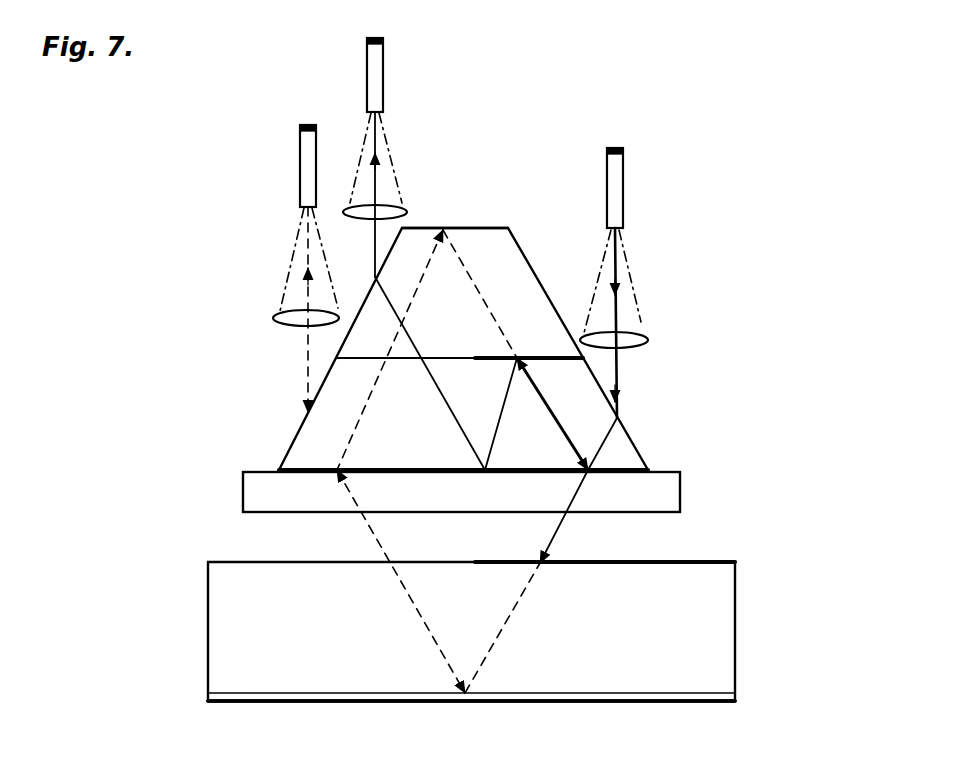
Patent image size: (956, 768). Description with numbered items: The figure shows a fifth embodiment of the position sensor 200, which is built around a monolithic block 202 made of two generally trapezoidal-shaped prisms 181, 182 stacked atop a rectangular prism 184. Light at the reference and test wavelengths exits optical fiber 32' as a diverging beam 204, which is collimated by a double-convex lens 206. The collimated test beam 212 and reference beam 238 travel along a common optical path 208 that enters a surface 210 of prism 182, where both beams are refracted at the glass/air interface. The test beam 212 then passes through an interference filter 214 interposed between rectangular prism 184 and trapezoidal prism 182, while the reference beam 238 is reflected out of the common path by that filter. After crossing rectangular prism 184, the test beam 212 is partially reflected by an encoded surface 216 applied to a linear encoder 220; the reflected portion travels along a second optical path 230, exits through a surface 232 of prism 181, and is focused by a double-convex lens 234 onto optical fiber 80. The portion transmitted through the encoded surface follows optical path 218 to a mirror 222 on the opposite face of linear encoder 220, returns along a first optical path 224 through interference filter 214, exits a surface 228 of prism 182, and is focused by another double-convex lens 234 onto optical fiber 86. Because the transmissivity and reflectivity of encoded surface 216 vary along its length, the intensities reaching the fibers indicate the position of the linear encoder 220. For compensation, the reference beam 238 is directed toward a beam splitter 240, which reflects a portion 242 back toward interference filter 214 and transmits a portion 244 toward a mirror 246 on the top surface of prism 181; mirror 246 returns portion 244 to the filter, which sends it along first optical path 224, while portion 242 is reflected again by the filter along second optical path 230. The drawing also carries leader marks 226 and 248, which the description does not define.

The optical fiber 80 is at (384, 64).
The optical fiber 86 is at (300, 152).
The optical fiber 32' is at (653, 187).
The trapezoidal-shaped prism 181 is at (490, 246).
The trapezoidal-shaped prism 182 is at (492, 333).
The rectangular prism 184 is at (243, 496).
The position sensor 200 is at (790, 347).
The monolithic block 202 is at (280, 392).
The diverging beam 204 is at (640, 287).
The double-convex lens 206 is at (649, 338).
The common optical path 208 is at (622, 382).
The surface 210 is at (613, 428).
The test beam 212 is at (580, 495).
The interference filter 214 is at (612, 470).
The encoded surface 216 is at (735, 562).
The optical path 218 is at (495, 642).
The linear encoder 220 is at (727, 645).
The mirror 222 is at (735, 701).
The first optical path 224 is at (410, 612).
The diverging light cone 226 is at (285, 265).
The surface 228 is at (297, 433).
The second optical path 230 is at (468, 441).
The surface 232 is at (366, 300).
The double-convex lens 234 is at (285, 315).
The reference beam 238 is at (543, 415).
The beam splitter 240 is at (405, 362).
The portion of the reference beam 242 is at (493, 422).
The portion of the reference beam 244 is at (493, 302).
The mirror 246 is at (477, 228).
The internal beam 248 is at (420, 283).